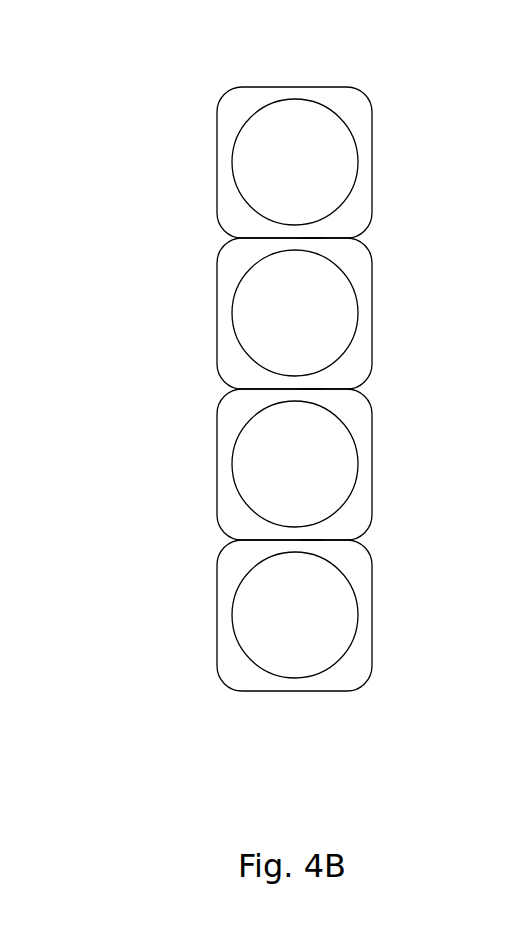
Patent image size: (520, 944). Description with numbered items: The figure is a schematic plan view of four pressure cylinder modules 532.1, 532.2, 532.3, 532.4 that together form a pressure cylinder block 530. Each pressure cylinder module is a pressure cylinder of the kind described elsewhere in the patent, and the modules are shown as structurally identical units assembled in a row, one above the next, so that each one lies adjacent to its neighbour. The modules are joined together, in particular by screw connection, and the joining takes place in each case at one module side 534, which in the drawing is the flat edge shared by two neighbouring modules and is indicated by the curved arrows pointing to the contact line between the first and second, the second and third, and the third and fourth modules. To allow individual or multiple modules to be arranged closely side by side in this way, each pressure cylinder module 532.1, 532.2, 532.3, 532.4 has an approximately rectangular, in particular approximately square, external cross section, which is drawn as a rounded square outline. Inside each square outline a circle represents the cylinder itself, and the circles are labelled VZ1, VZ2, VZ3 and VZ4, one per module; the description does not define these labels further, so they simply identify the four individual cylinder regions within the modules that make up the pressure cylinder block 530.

The pressure cylinder block 530 is at (432, 30).
The pressure cylinder module 532.1 is at (395, 147).
The pressure cylinder module 532.2 is at (395, 304).
The pressure cylinder module 532.3 is at (395, 457).
The pressure cylinder module 532.4 is at (395, 604).
The module side 534 is at (304, 224).
The first detection zone VZ1 is at (252, 145).
The second detection zone VZ2 is at (252, 291).
The third detection zone VZ3 is at (252, 451).
The fourth detection zone VZ4 is at (252, 616).